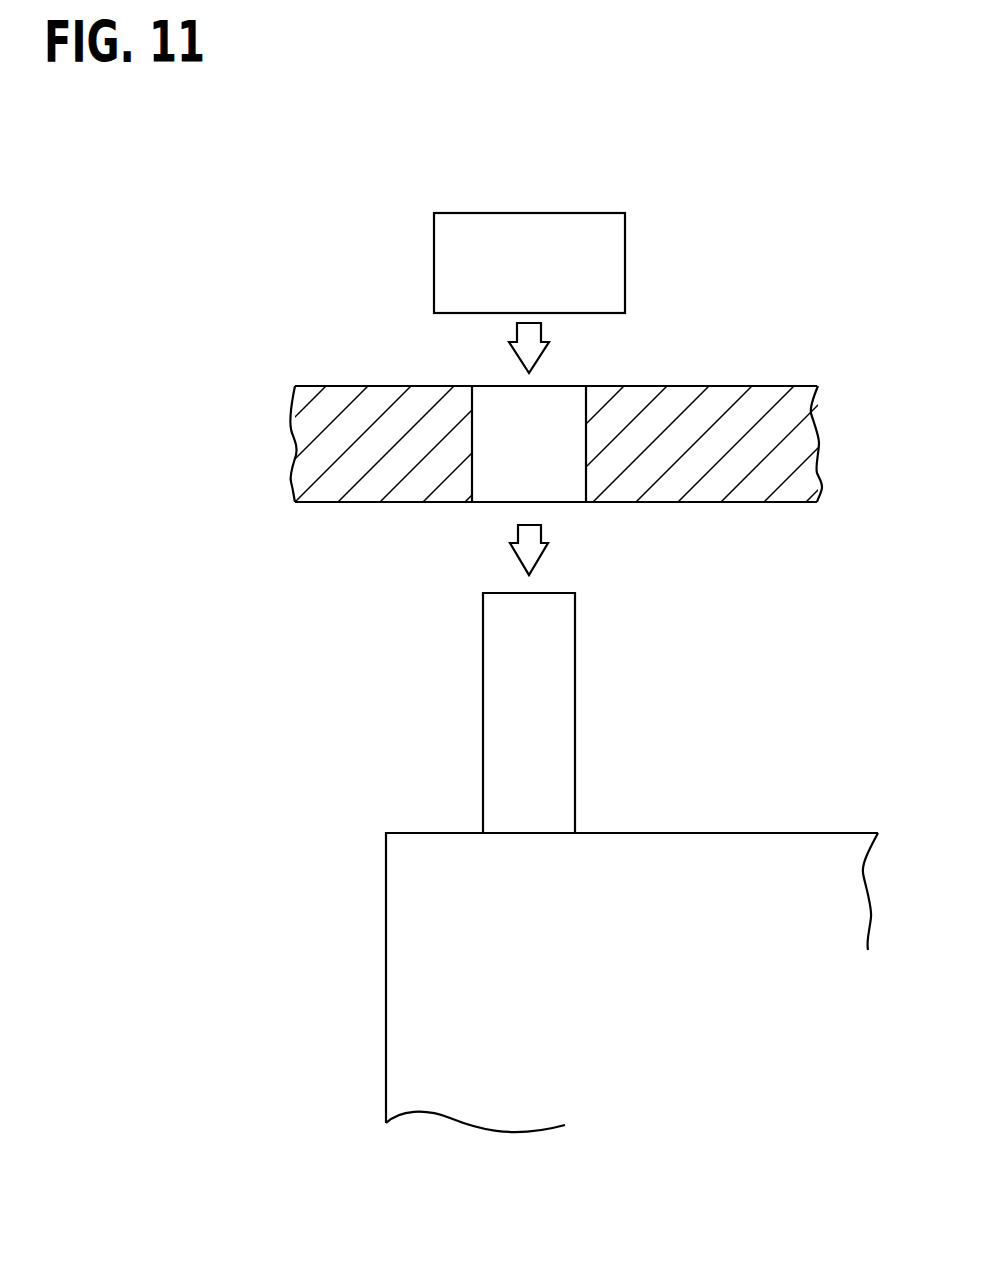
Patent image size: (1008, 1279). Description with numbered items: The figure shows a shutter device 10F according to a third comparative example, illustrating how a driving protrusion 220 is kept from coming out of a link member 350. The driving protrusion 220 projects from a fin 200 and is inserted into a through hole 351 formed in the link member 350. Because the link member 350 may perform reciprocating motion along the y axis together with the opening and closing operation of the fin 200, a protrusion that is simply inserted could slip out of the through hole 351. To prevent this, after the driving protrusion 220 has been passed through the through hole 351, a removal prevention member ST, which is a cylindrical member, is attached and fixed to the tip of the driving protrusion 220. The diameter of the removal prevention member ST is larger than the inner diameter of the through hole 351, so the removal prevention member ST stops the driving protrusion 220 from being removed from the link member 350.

The shutter device 10F is at (192, 386).
The removal prevention member ST is at (575, 213).
The link member 350 is at (740, 386).
The through hole 351 is at (473, 427).
The driving protrusion 220 is at (576, 712).
The fin 200 is at (746, 833).